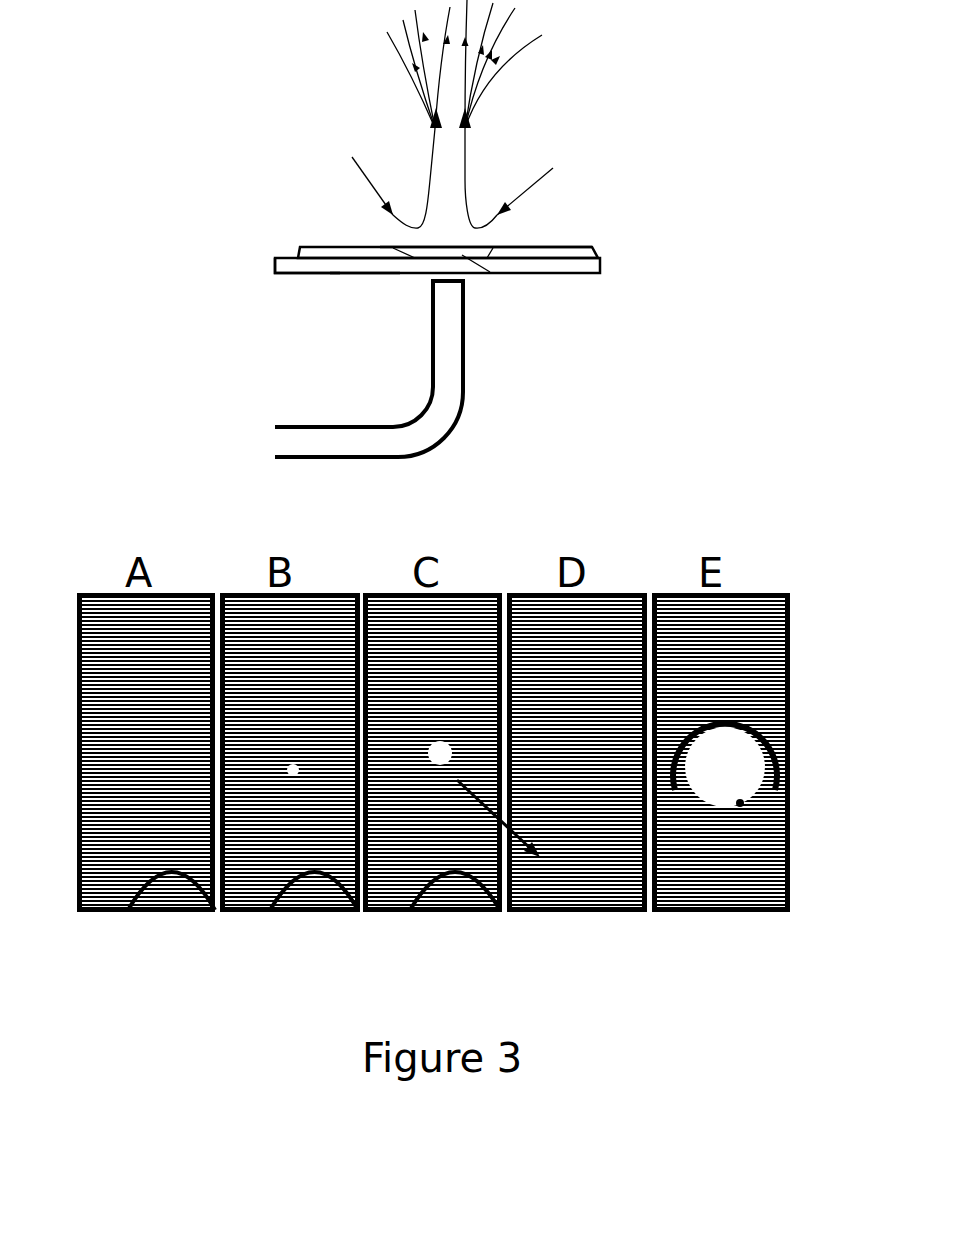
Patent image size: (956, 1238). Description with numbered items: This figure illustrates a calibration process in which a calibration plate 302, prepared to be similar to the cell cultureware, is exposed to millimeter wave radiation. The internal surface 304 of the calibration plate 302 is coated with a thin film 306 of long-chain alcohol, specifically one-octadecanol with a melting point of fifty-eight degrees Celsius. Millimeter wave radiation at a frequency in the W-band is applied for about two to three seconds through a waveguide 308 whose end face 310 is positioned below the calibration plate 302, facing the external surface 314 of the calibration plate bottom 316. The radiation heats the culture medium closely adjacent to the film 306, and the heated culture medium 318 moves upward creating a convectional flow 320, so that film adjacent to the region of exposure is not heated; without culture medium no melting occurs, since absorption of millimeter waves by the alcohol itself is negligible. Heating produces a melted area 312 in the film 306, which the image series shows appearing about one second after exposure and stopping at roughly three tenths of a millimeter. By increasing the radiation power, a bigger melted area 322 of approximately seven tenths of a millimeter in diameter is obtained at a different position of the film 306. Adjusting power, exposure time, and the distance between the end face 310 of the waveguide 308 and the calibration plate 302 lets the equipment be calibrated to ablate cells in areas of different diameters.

The calibration plate 302 is at (612, 268).
The internal surface 304 is at (597, 255).
The thin film 306 is at (582, 245).
The waveguide 308 is at (348, 462).
The end face 310 is at (463, 273).
The melted area 312 is at (490, 272).
The external surface 314 is at (290, 271).
The calibration plate bottom 316 is at (353, 274).
The heated culture medium 318 is at (487, 35).
The convectional flow 320 is at (352, 170).
The bigger melted area 322 is at (740, 803).